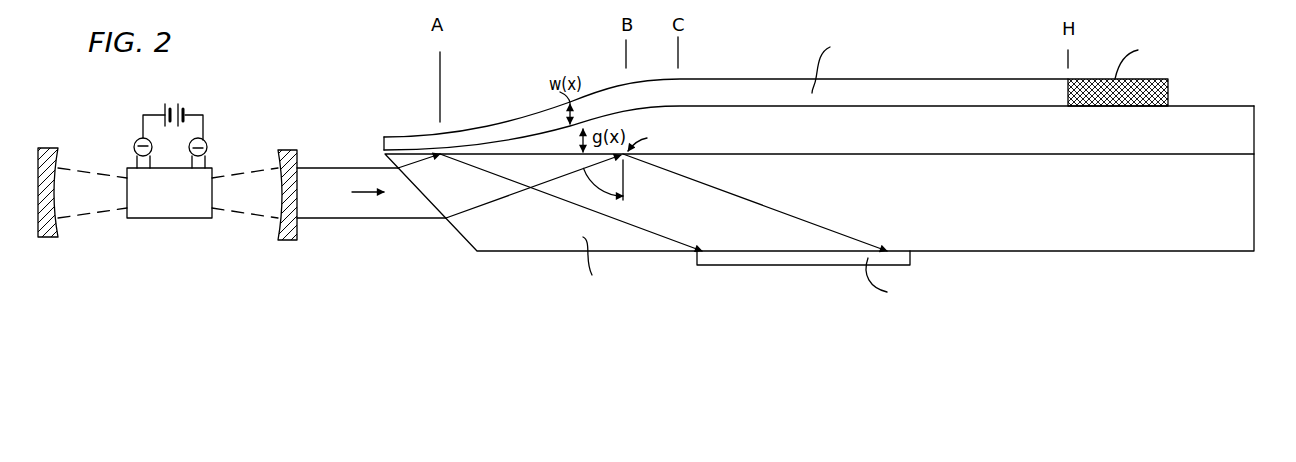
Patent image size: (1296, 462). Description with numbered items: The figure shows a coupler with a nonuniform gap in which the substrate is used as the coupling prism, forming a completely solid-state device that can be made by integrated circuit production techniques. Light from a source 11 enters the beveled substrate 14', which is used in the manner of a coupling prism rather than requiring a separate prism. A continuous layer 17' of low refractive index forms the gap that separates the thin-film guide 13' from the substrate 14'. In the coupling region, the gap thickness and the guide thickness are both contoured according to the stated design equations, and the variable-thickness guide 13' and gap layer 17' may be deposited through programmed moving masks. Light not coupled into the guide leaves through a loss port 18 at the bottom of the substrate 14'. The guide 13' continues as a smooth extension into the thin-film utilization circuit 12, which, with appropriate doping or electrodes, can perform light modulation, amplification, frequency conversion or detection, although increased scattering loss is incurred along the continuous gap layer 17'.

The laser source 11 is at (181, 256).
The thin-film utilization circuit 12 is at (1170, 92).
The thin-film guide 13' is at (819, 86).
The substrate 14' is at (804, 215).
The low refractive index gap layer 17' is at (1115, 114).
The loss port 18 is at (818, 258).